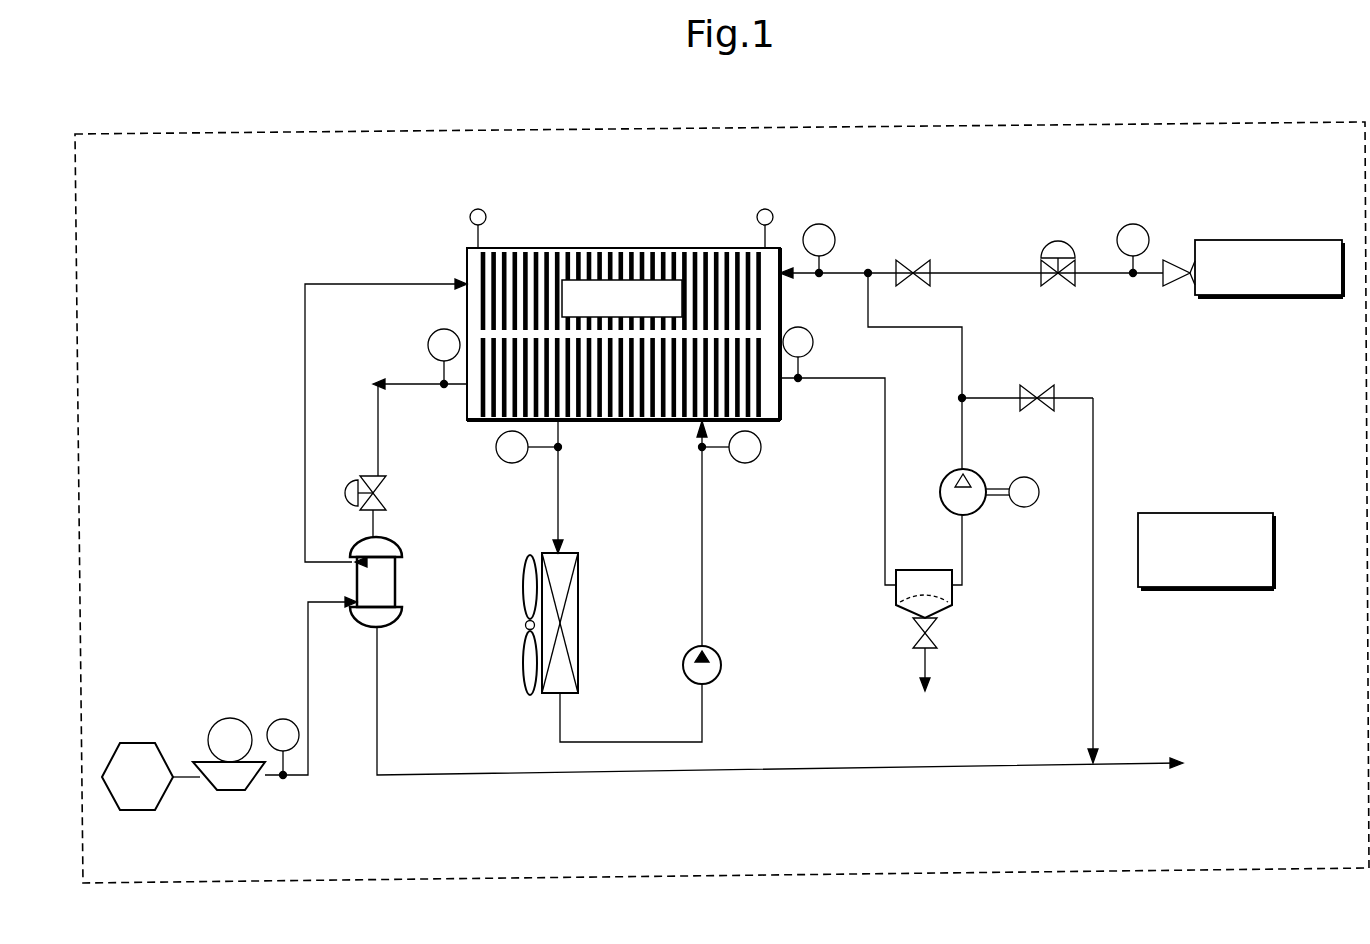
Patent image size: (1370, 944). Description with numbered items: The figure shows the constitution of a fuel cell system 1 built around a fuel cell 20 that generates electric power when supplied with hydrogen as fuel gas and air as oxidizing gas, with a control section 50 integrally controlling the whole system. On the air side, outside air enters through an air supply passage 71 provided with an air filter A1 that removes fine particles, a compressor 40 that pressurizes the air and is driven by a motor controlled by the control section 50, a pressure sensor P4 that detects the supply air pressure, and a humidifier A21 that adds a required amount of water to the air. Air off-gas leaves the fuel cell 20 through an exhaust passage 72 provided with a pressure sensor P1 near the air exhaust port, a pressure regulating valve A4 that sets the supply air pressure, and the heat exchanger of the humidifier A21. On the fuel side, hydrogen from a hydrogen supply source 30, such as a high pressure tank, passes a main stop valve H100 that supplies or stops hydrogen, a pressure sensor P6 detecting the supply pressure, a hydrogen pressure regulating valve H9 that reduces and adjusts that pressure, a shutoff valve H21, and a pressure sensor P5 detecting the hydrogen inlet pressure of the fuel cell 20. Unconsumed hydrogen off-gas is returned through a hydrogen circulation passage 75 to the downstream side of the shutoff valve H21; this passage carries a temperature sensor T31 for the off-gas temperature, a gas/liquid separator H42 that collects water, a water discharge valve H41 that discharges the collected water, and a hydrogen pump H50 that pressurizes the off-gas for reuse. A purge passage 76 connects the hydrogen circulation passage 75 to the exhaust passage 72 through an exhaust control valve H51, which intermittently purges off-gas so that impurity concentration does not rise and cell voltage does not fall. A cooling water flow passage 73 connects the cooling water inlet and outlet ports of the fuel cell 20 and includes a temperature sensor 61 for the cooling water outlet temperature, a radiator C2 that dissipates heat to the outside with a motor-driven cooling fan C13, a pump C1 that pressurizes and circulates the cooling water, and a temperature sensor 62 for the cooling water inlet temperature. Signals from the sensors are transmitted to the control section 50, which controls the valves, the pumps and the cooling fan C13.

The fuel cell system 1 is at (1042, 110).
The fuel cell 20 is at (640, 248).
The hydrogen supply source 30 is at (1290, 240).
The compressor 40 is at (236, 790).
The control section 50 is at (1230, 513).
The temperature sensor 61 is at (509, 447).
The temperature sensor 62 is at (749, 447).
The air supply passage 71 is at (307, 497).
The exhaust passage 72 is at (823, 764).
The cooling water flow passage 73 is at (702, 538).
The hydrogen circulation passage 75 is at (886, 535).
The purge passage 76 is at (1094, 503).
The air filter A1 is at (137, 776).
The pressure regulating valve A4 is at (362, 480).
The humidifier A21 is at (394, 568).
The pressure sensor P1 is at (444, 345).
The pressure sensor P4 is at (283, 736).
The pressure sensor P5 is at (819, 237).
The pressure sensor P6 is at (1133, 237).
The temperature sensor T31 is at (804, 342).
The pump C1 is at (685, 665).
The radiator C2 is at (578, 623).
The cooling fan C13 is at (503, 625).
The hydrogen pressure regulating valve H9 is at (1058, 249).
The shutoff valve H21 is at (913, 261).
The water discharge valve H41 is at (902, 654).
The gas/liquid separator H42 is at (924, 581).
The hydrogen pump H50 is at (966, 492).
The exhaust control valve H51 is at (1027, 386).
The main stop valve H100 is at (1162, 283).